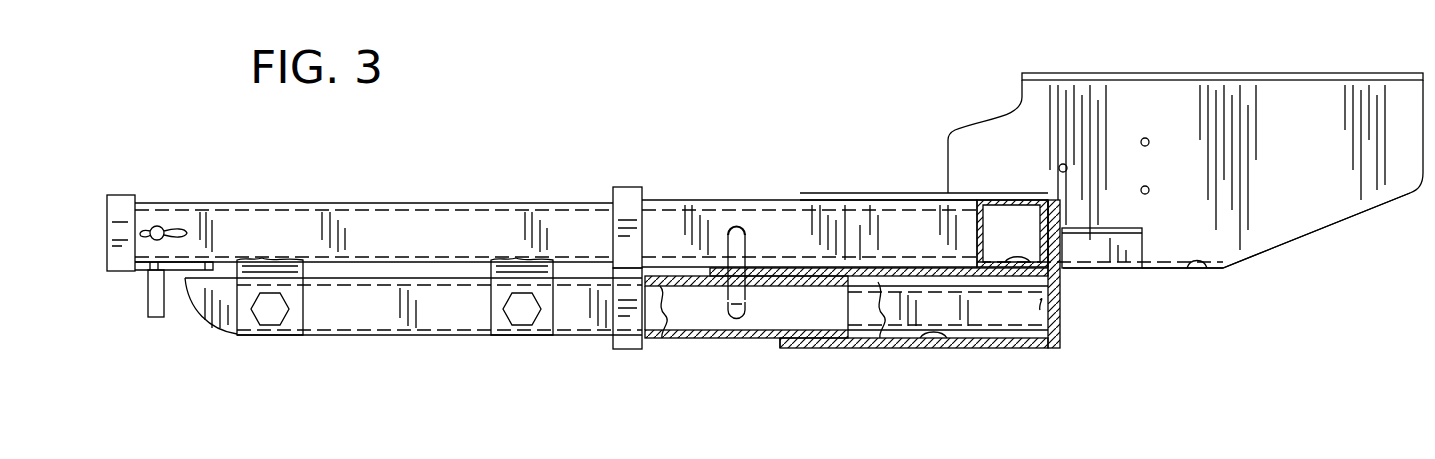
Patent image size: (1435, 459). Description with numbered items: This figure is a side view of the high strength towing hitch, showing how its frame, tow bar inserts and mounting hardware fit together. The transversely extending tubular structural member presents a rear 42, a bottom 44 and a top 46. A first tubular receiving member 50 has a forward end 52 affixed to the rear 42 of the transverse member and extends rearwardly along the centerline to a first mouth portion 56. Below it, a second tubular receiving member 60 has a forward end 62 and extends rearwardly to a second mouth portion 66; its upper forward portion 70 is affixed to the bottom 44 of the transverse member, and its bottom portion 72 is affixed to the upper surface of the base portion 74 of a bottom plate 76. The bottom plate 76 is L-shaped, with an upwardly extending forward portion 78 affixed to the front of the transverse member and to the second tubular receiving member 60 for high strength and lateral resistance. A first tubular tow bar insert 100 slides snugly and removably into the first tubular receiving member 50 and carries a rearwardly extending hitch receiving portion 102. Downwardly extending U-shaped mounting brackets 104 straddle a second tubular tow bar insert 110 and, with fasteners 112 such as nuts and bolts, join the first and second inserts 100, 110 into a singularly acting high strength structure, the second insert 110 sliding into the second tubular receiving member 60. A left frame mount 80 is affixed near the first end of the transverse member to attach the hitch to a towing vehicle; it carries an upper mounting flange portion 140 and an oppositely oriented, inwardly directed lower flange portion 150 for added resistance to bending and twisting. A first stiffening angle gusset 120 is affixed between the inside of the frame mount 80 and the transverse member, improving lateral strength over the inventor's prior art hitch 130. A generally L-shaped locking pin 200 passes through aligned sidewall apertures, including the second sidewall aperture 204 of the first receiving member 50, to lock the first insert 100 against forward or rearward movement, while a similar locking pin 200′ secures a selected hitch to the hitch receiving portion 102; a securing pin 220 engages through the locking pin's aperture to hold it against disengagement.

The rear 42 is at (992, 198).
The bottom 44 is at (1010, 257).
The top 46 is at (1033, 198).
The first tubular receiving member 50 is at (653, 220).
The forward end 52 is at (984, 233).
The first mouth portion 56 is at (618, 187).
The second tubular receiving member 60 is at (655, 322).
The forward end 62 is at (1040, 305).
The second mouth portion 66 is at (616, 349).
The upper forward portion 70 is at (1010, 277).
The bottom portion 72 is at (918, 343).
The base portion 74 is at (900, 343).
The bottom plate 76 is at (1036, 347).
The upwardly extending forward portion 78 is at (1050, 200).
The left frame mount 80 is at (1428, 73).
The first tubular tow bar insert 100 is at (387, 220).
The hitch receiving portion 102 is at (123, 195).
The U-shaped mounting bracket 104 is at (293, 315).
The second tubular tow bar insert 110 is at (423, 320).
The fasteners 112 is at (270, 318).
The first stiffening angle gusset 120 is at (1123, 228).
The prior art hitch 130 is at (1292, 217).
The upper mounting flange portion 140 is at (1145, 78).
The lower flange portion 150 is at (1195, 262).
The locking pin 200 is at (737, 222).
The locking pin 200′ is at (162, 318).
The second sidewall aperture 204 is at (747, 223).
The securing pin 220 is at (178, 228).